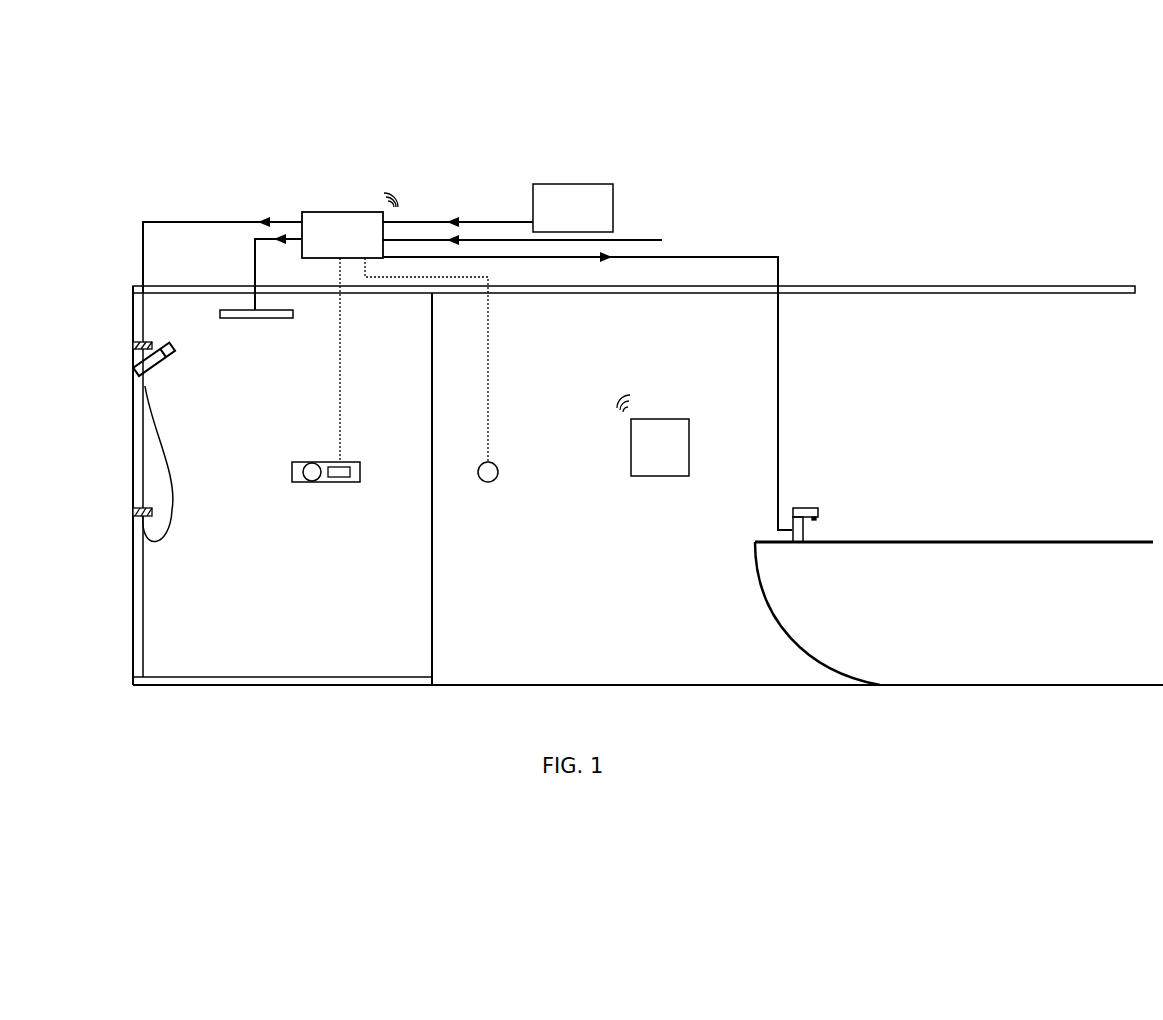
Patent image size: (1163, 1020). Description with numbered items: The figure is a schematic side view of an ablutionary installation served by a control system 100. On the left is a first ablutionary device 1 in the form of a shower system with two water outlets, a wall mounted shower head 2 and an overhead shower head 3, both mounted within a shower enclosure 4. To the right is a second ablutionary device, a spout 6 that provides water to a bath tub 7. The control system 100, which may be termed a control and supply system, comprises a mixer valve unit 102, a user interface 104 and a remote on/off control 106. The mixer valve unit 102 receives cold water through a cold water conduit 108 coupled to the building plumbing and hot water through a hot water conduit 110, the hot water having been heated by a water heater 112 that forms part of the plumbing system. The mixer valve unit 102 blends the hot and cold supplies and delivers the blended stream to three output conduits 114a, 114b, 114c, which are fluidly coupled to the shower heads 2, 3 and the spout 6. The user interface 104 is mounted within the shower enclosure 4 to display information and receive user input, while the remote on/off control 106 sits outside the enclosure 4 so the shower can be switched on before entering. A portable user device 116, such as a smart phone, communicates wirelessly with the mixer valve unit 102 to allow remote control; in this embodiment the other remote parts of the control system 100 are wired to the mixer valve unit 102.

The first ablutionary device 1 is at (76, 454).
The wall mounted shower head 2 is at (139, 370).
The overhead shower head 3 is at (276, 318).
The shower enclosure 4 is at (432, 620).
The spout 6 is at (818, 506).
The bath tub 7 is at (954, 613).
The control system 100 is at (315, 170).
The mixer valve unit 102 is at (350, 225).
The user interface 104 is at (350, 482).
The remote on/off control 106 is at (497, 478).
The cold water conduit 108 is at (648, 240).
The hot water conduit 110 is at (437, 222).
The water heater 112 is at (573, 208).
The output conduit 114a is at (163, 222).
The output conduit 114b is at (255, 268).
The output conduit 114c is at (740, 257).
The portable user device 116 is at (653, 435).